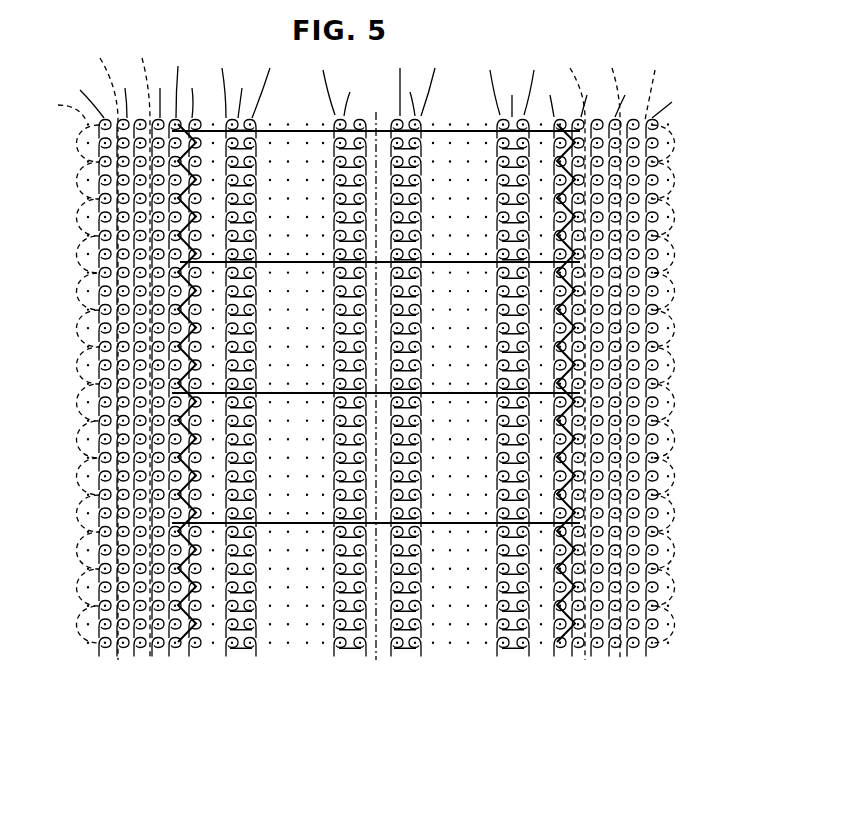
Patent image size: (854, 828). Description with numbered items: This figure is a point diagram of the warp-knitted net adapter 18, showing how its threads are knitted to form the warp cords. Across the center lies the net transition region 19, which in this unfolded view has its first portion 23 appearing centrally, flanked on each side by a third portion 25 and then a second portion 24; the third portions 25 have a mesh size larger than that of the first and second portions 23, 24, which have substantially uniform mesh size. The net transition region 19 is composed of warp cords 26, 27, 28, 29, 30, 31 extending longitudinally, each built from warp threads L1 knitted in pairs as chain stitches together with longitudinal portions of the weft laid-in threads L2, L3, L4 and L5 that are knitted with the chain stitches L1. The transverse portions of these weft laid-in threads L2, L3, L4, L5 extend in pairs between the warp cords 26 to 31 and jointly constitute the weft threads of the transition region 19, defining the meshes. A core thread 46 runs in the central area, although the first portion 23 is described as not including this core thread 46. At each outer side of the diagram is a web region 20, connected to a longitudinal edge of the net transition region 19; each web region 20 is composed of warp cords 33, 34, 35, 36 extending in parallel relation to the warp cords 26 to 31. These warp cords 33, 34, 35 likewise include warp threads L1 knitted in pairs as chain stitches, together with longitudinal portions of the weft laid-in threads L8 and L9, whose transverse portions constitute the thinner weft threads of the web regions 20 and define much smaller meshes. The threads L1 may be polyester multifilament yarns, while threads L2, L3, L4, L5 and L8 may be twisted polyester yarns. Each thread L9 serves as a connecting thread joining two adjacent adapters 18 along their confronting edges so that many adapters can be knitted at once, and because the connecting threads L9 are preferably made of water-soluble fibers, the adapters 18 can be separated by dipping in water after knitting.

The adapter 18 is at (686, 295).
The net transition region 19 is at (555, 743).
The web region 20 is at (185, 743).
The first portion 23 is at (400, 703).
The second portion 24 is at (240, 703).
The third portion 25 is at (340, 703).
The warp cord 26 is at (200, 668).
The warp cord 27 is at (258, 668).
The warp cord 28 is at (365, 668).
The warp cord 29 is at (420, 668).
The warp cord 30 is at (530, 668).
The warp cord 31 is at (583, 668).
The warp cord 33 is at (130, 668).
The warp cord 34 is at (165, 668).
The warp cord 35 is at (617, 668).
The warp cord 36 is at (652, 668).
The core thread 46 is at (378, 408).
The warp thread L1 is at (377, 87).
The weft laid-in thread L2 is at (335, 59).
The weft laid-in thread L3 is at (355, 59).
The weft laid-in thread L4 is at (311, 59).
The weft laid-in thread L5 is at (451, 61).
The weft laid-in thread L8 is at (355, 56).
The connecting thread L9 is at (350, 82).